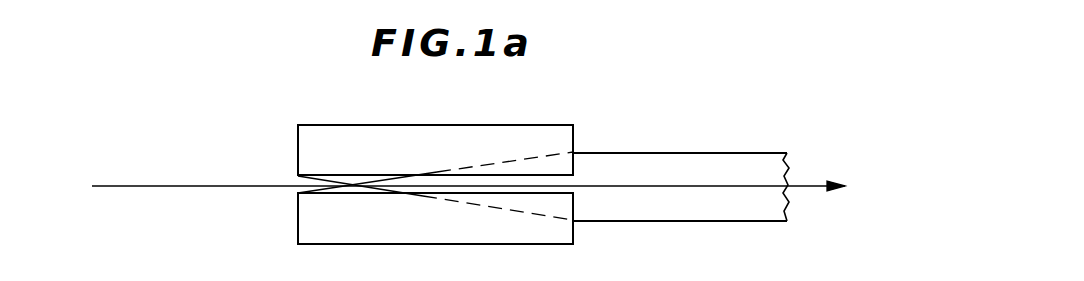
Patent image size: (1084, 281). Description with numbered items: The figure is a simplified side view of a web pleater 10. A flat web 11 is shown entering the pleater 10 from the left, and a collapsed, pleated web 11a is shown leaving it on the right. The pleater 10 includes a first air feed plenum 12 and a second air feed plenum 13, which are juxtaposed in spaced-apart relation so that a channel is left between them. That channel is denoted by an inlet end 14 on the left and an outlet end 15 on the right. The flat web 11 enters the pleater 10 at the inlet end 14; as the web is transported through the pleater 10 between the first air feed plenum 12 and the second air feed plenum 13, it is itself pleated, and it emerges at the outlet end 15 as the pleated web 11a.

The web pleater 10 is at (562, 113).
The flat web 11 is at (188, 185).
The pleated web 11a is at (652, 153).
The first air feed plenum 12 is at (371, 161).
The second air feed plenum 13 is at (377, 230).
The inlet end 14 is at (294, 188).
The outlet end 15 is at (573, 205).